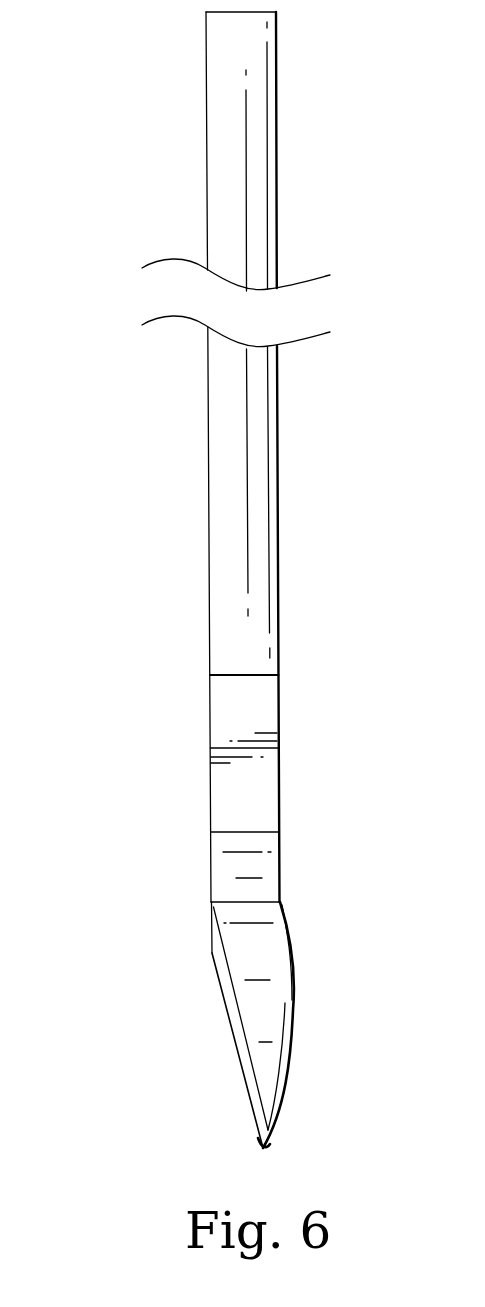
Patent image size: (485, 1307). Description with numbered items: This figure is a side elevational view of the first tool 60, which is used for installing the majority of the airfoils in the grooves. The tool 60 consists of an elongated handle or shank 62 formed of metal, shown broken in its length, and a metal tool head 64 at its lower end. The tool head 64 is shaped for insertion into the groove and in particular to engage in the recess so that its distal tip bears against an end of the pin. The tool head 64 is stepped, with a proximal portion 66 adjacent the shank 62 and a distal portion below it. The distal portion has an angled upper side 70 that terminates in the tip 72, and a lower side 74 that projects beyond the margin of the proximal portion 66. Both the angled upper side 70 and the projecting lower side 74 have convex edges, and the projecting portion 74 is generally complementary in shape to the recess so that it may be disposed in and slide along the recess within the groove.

The first tool 60 is at (157, 542).
The elongated handle or shank 62 is at (280, 490).
The tool head 64 is at (280, 868).
The proximal portion 66 is at (280, 767).
The angled upper side 70 is at (227, 990).
The tip 72 is at (263, 1147).
The lower side / projecting portion 74 is at (288, 1052).